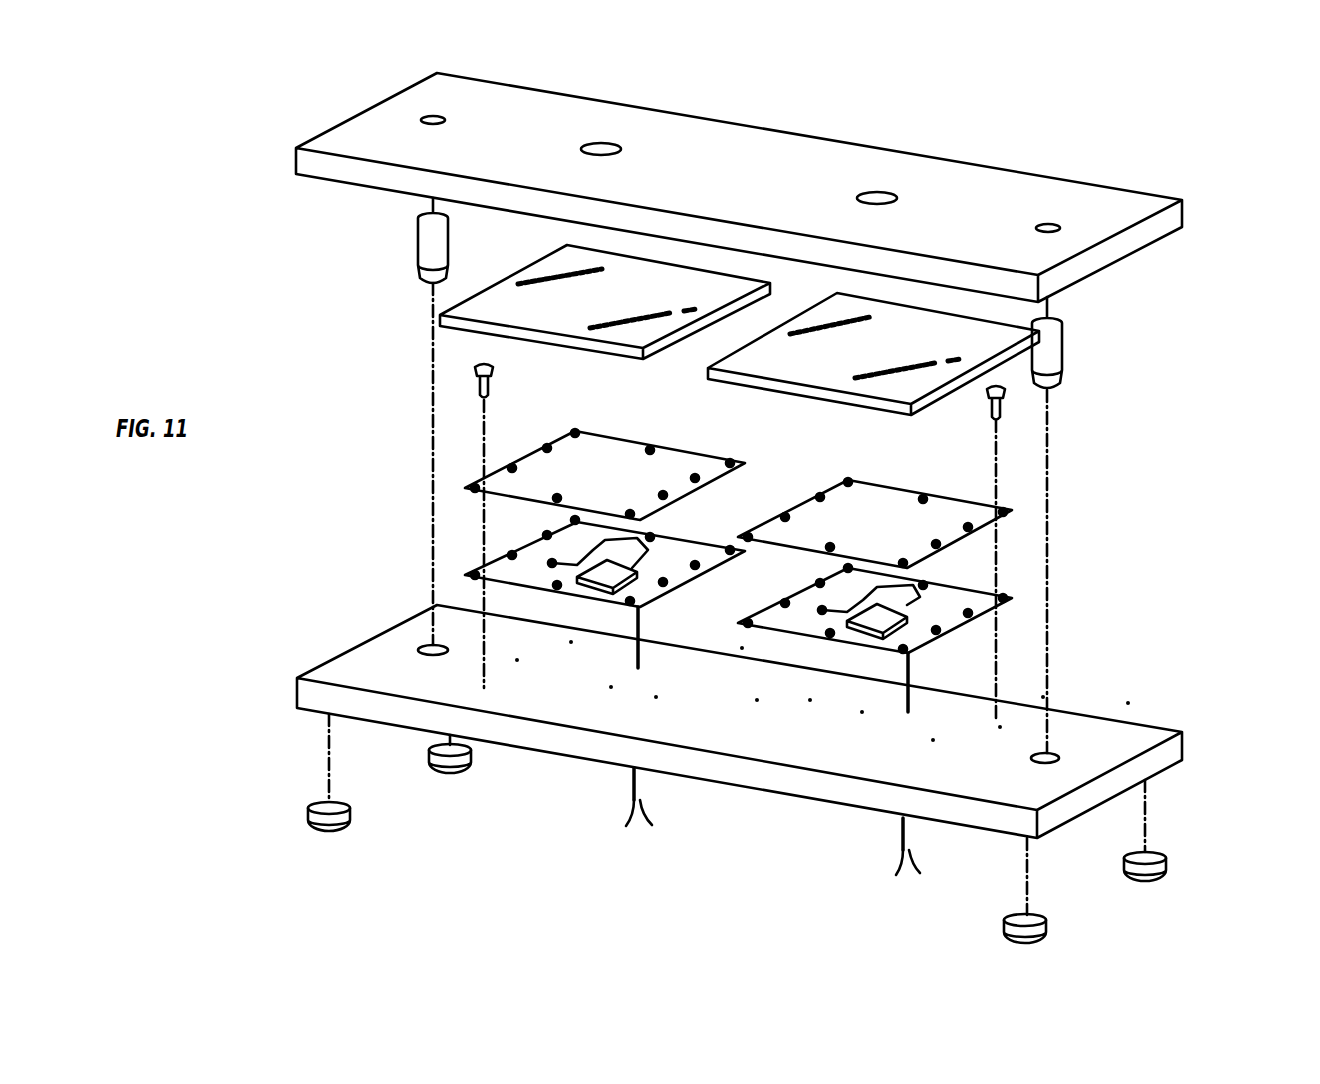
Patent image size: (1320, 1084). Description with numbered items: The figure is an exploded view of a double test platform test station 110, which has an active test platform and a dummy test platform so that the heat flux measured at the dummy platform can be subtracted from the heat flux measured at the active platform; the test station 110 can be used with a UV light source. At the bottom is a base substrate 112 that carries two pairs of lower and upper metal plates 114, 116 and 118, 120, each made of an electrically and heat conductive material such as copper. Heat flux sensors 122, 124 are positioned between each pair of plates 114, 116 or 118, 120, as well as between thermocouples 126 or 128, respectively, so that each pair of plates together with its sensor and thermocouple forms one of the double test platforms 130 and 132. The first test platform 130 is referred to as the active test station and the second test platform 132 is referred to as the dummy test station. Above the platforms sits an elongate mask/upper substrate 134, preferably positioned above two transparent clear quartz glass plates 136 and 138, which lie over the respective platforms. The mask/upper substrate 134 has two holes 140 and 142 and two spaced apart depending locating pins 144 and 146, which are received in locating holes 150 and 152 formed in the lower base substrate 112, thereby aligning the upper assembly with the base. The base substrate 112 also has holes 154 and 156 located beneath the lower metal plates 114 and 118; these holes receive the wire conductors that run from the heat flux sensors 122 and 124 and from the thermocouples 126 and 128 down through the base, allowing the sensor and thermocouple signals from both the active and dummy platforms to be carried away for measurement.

The double test platform test station 110 is at (1211, 517).
The base substrate 112 is at (1183, 752).
The lower metal plate 114 is at (688, 545).
The upper metal plate 116 is at (558, 442).
The lower metal plate 118 is at (955, 632).
The upper metal plate 120 is at (961, 500).
The heat flux sensor 122 is at (642, 578).
The heat flux sensor 124 is at (938, 600).
The thermocouple 126 is at (550, 562).
The thermocouple 128 is at (820, 606).
The first test platform 130 is at (641, 430).
The second test platform 132 is at (893, 460).
The mask/upper substrate 134 is at (1107, 203).
The transparent clear quartz glass plate 136 is at (604, 305).
The transparent clear quartz glass plate 138 is at (874, 353).
The hole 140 is at (610, 143).
The hole 142 is at (886, 185).
The locating pin 144 is at (1052, 346).
The locating pin 146 is at (418, 244).
The locating hole 150 is at (422, 647).
The locating hole 152 is at (1052, 754).
The hole 154 is at (918, 712).
The hole 156 is at (636, 665).